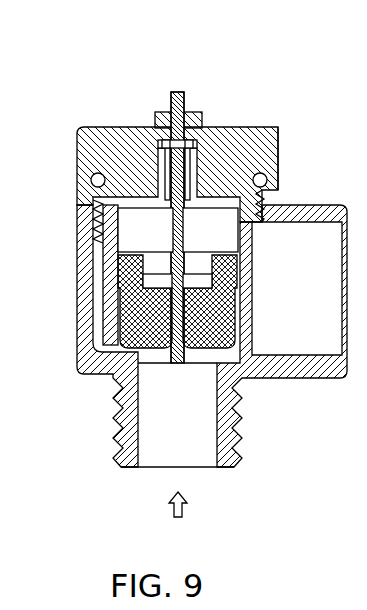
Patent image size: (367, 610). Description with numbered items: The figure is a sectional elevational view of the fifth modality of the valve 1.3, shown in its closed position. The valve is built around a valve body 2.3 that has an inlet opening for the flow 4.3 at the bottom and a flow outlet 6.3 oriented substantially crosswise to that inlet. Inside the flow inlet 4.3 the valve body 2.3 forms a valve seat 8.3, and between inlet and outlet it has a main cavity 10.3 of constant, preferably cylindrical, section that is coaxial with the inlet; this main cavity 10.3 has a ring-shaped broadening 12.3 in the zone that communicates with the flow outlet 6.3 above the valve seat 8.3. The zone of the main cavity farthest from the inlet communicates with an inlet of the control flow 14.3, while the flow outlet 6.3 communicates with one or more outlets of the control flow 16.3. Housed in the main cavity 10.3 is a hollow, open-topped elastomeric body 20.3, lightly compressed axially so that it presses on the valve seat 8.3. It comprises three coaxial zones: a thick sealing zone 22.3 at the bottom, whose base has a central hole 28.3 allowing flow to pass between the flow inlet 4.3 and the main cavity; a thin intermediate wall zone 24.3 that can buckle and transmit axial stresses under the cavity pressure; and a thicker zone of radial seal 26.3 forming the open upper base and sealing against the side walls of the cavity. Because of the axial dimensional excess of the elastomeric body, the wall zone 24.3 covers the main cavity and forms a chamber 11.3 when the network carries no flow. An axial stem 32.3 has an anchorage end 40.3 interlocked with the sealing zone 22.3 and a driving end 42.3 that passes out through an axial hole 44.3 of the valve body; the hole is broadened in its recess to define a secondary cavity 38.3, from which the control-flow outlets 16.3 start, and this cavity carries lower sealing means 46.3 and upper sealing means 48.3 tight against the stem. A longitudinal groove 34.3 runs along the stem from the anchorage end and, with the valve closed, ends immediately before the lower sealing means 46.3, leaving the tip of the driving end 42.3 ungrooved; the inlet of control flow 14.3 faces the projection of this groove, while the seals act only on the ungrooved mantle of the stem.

The valve 1.3 is at (281, 126).
The valve body 2.3 is at (290, 194).
The inlet opening for the flow 4.3 is at (158, 464).
The flow outlet 6.3 is at (240, 281).
The valve seat 8.3 is at (125, 338).
The main cavity 10.3 is at (243, 293).
The chamber 11.3 is at (100, 243).
The ring-shaped broadening 12.3 is at (115, 328).
The inlet of the control flow 14.3 is at (82, 127).
The outlet of the control flow 16.3 is at (279, 132).
The elastomeric body 20.3 is at (118, 303).
The sealing zone 22.3 is at (200, 358).
The wall zone 24.3 is at (297, 288).
The zone of radial seal 26.3 is at (110, 264).
The central hole 28.3 is at (140, 349).
The axial stem 32.3 is at (196, 262).
The longitudinal groove 34.3 is at (167, 262).
The secondary cavity 38.3 is at (91, 173).
The anchorage end 40.3 is at (235, 346).
The driving end 42.3 is at (184, 94).
The axial hole 44.3 is at (97, 203).
The lower sealing means 46.3 is at (201, 190).
The upper sealing means 48.3 is at (163, 176).